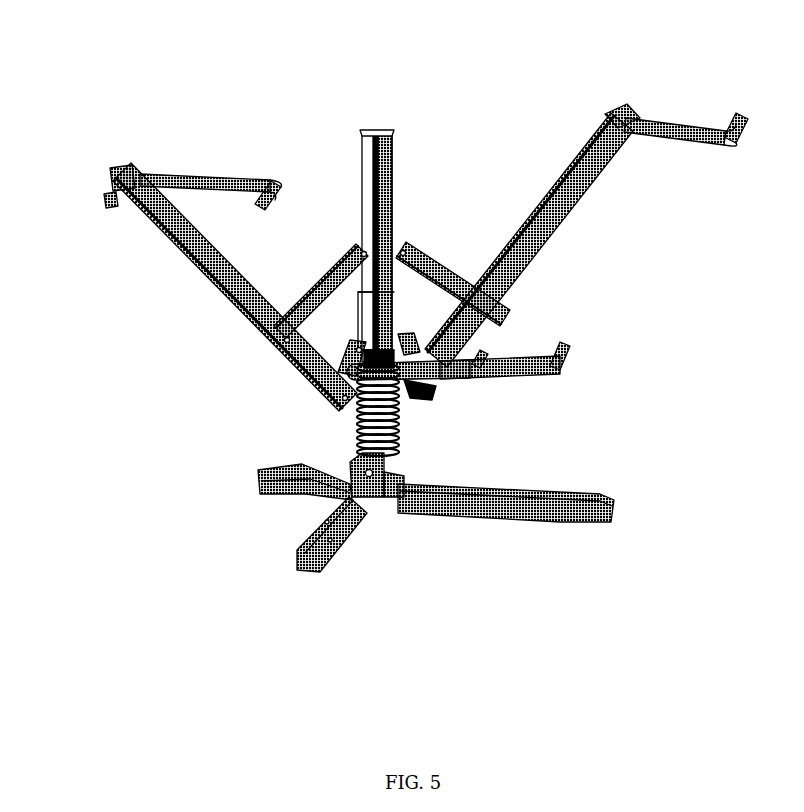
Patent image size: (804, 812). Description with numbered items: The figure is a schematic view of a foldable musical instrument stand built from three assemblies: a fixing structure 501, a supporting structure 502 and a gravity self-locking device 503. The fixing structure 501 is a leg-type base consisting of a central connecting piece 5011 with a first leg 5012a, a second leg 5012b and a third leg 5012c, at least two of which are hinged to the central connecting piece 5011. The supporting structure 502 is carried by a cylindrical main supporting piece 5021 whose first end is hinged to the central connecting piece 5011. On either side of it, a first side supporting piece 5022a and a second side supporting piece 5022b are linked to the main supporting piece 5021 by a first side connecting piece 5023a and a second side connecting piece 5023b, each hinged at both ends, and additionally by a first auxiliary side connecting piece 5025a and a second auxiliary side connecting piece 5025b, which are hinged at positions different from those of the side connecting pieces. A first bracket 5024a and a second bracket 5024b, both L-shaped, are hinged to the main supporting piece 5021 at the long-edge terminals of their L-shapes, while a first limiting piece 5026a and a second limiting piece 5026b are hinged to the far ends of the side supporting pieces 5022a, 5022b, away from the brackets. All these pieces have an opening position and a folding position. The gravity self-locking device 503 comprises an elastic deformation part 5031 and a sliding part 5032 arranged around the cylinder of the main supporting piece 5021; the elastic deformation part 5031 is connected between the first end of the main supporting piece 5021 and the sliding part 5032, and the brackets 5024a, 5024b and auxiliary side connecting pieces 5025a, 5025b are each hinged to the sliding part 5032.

The fixing structure 501 is at (268, 645).
The central connecting piece 5011 is at (397, 508).
The first leg 5012a is at (300, 549).
The second leg 5012b is at (533, 498).
The third leg 5012c is at (302, 468).
The supporting structure 502 is at (223, 50).
The main supporting piece 5021 is at (367, 148).
The first side supporting piece 5022a is at (550, 227).
The second side supporting piece 5022b is at (310, 356).
The first side connecting piece 5023a is at (448, 287).
The second side connecting piece 5023b is at (322, 303).
The first bracket 5024a is at (563, 360).
The second bracket 5024b is at (343, 388).
The first auxiliary side connecting piece 5025a is at (406, 342).
The second auxiliary side connecting piece 5025b is at (347, 372).
The first limiting piece 5026a is at (660, 130).
The second limiting piece 5026b is at (227, 203).
The gravity self-locking device 503 is at (450, 441).
The elastic deformation part 5031 is at (400, 412).
The sliding part 5032 is at (371, 311).